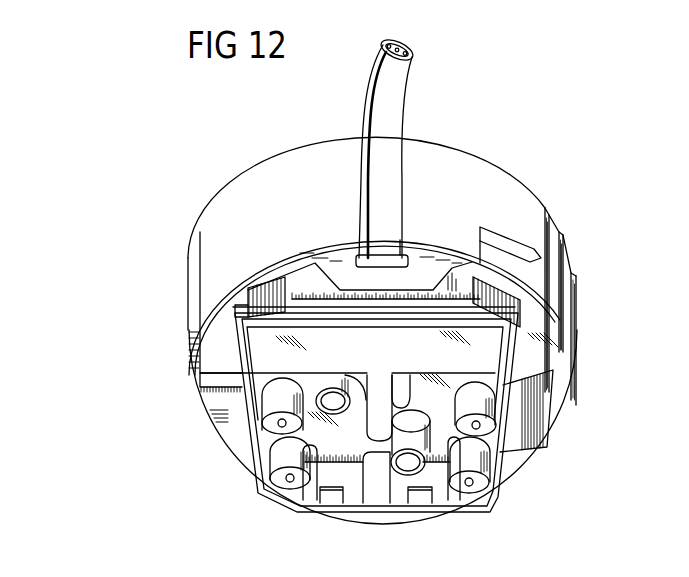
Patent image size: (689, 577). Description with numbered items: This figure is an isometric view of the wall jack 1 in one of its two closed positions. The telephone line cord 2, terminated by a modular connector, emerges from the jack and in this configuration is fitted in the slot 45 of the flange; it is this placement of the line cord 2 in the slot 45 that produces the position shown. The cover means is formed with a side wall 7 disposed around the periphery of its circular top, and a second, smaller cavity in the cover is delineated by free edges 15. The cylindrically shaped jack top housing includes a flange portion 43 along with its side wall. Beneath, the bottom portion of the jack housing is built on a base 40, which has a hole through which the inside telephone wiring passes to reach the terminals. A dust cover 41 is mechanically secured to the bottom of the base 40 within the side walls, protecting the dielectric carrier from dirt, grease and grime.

The wall jack 1 is at (162, 172).
The telephone line cord 2 is at (402, 86).
The side wall 7 is at (457, 204).
The free edges 15 is at (498, 236).
The base 40 is at (448, 410).
The dust cover 41 is at (373, 356).
The flange portion 43 is at (238, 453).
The slot 45 is at (396, 268).